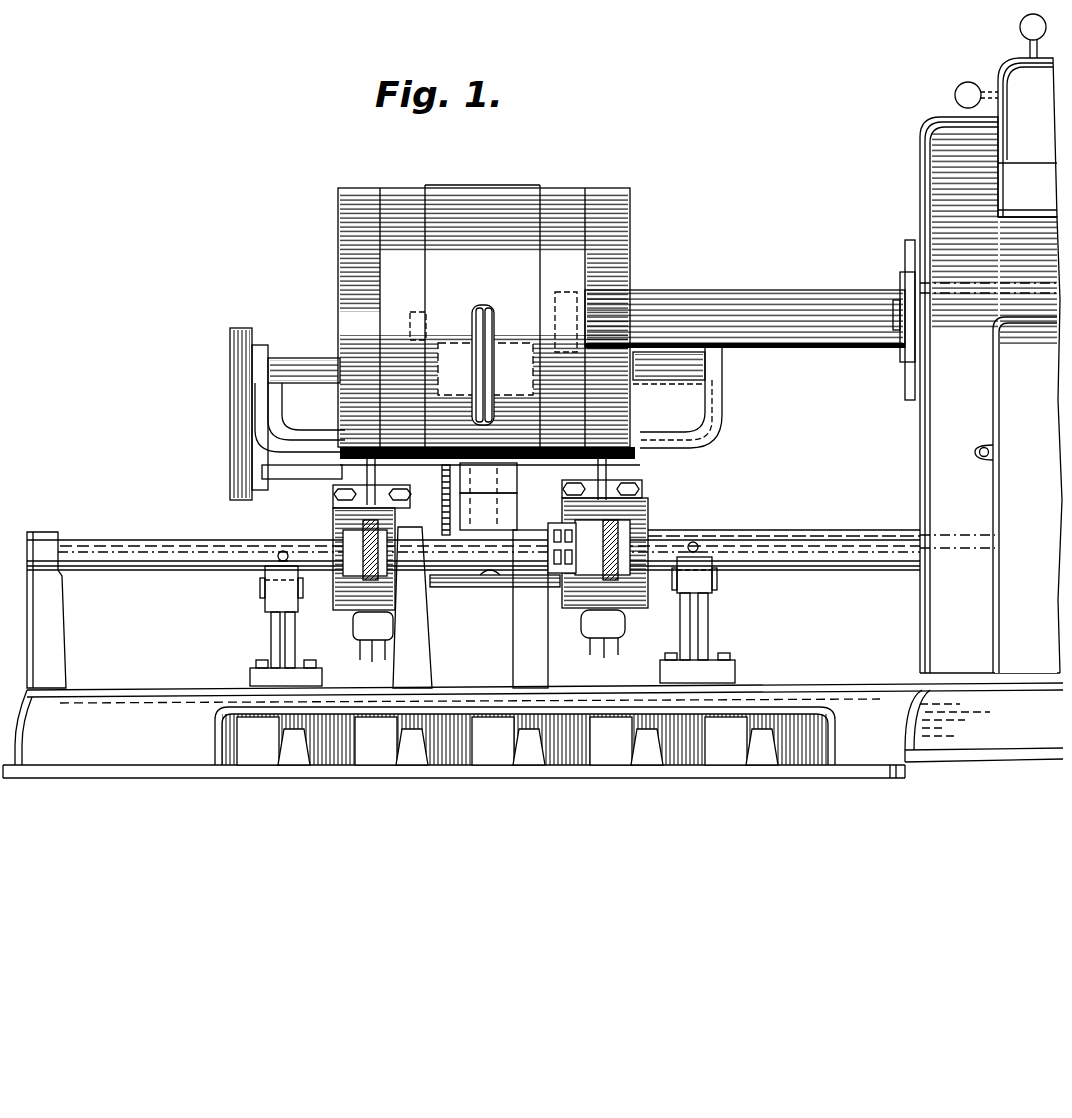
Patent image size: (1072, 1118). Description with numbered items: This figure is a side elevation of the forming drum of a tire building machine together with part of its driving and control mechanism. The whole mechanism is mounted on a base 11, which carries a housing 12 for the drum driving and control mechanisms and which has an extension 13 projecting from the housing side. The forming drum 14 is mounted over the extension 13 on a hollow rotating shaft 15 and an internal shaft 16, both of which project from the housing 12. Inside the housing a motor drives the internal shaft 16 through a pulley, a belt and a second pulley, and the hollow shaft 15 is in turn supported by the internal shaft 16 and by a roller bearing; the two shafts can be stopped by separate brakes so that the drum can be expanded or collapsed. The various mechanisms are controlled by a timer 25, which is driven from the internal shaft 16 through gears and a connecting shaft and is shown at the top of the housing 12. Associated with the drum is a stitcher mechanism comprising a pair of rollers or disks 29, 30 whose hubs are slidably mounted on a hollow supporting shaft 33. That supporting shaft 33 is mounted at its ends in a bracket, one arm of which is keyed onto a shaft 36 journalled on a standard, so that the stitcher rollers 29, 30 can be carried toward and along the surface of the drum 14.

The base 11 is at (962, 740).
The housing 12 is at (922, 128).
The extension 13 is at (180, 752).
The forming drum 14 is at (486, 299).
The hollow rotating shaft 15 is at (688, 288).
The internal shaft 16 is at (455, 310).
The timer 25 is at (1012, 80).
The roller or disk 29 is at (480, 308).
The roller or disk 30 is at (492, 312).
The hollow supporting shaft 33 is at (285, 362).
The shaft 36 is at (646, 434).